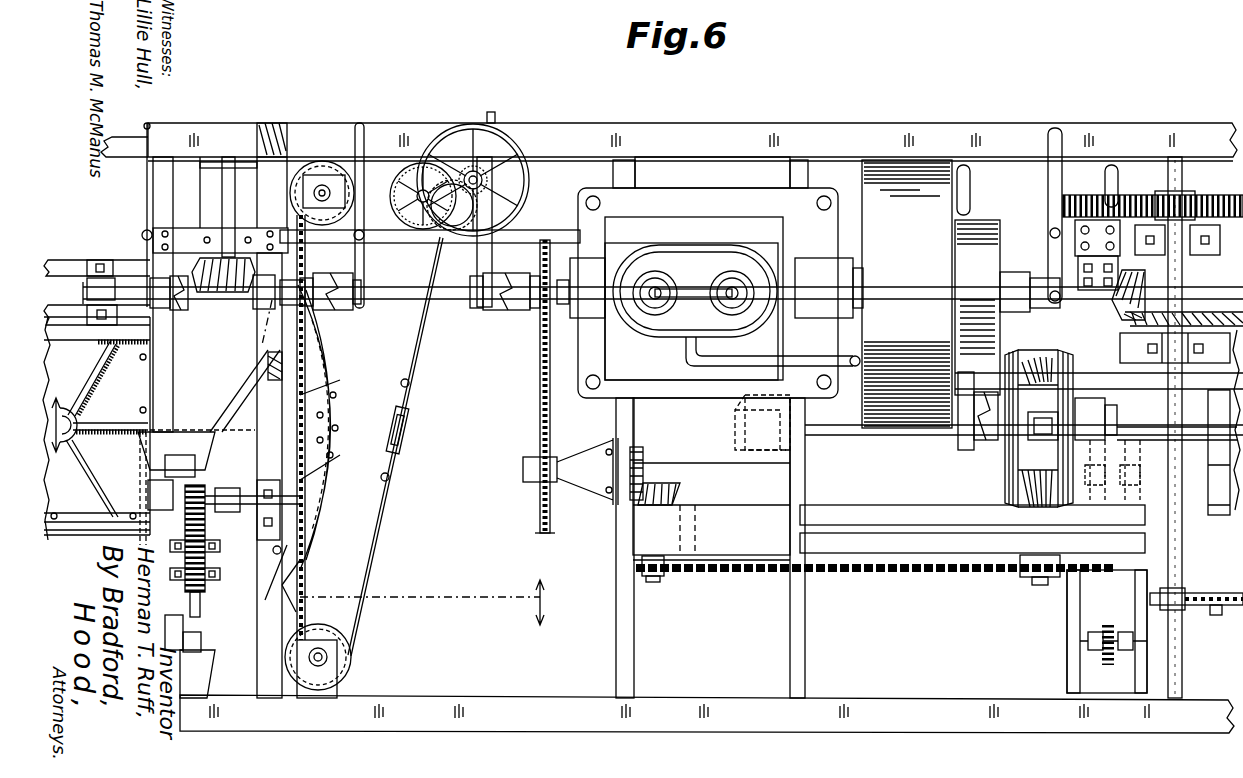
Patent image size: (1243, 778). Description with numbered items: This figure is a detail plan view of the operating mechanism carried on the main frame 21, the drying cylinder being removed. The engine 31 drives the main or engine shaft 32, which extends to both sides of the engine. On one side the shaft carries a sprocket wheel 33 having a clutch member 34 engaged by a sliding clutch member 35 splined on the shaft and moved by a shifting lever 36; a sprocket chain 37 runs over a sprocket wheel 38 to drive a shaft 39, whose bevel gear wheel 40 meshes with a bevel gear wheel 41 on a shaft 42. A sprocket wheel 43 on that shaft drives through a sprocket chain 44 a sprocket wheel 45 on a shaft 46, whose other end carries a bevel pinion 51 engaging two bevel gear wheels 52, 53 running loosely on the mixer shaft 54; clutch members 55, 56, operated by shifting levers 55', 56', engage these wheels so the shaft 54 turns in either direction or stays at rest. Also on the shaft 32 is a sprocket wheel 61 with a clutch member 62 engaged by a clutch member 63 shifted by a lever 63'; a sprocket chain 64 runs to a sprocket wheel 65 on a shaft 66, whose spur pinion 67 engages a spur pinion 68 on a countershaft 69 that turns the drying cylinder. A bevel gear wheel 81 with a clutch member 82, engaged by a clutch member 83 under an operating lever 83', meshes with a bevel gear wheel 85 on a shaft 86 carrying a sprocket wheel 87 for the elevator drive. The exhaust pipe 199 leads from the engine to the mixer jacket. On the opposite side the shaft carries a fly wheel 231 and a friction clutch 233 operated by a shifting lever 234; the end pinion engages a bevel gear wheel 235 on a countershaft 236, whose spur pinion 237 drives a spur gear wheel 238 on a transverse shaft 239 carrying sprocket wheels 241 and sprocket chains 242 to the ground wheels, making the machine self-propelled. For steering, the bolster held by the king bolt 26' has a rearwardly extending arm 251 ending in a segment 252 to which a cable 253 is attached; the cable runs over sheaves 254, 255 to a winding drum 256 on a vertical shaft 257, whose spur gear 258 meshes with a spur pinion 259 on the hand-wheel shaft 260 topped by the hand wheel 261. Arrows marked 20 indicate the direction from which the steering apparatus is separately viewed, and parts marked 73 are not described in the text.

The section line / direction indicator 20 is at (306, 511).
The main frame 21 is at (186, 136).
The king bolt 26' is at (96, 431).
The engine 31 is at (679, 282).
The main or engine shaft 32 is at (83, 294).
The sprocket wheel 33 is at (540, 312).
The clutch member 34 is at (512, 312).
The sliding clutch member 35 is at (491, 310).
The shifting lever 36 is at (494, 124).
The sprocket chain 37 is at (540, 410).
The sprocket wheel 38 is at (540, 508).
The shaft 39 is at (523, 468).
The bevel gear wheel 40 is at (646, 462).
The bevel gear wheel 41 is at (680, 496).
The shaft 42 is at (653, 580).
The sprocket wheel 43 is at (666, 576).
The sprocket chain 44 is at (915, 574).
The sprocket wheel 45 is at (1028, 577).
The shaft 46 is at (1044, 586).
The bevel pinion 51 is at (1031, 487).
The bevel gear wheel 52 is at (1005, 481).
The bevel gear wheel 53 is at (1058, 397).
The shaft 54 is at (838, 437).
The clutch member 55 is at (978, 424).
The shifting lever 55' is at (988, 189).
The clutch member 56 is at (1147, 488).
The shifting lever 56' is at (1132, 186).
The sprocket wheel 61 is at (316, 282).
The clutch member 62 is at (333, 311).
The clutch member 63 is at (374, 314).
The shifting lever 63' is at (383, 191).
The sprocket chain 64 is at (300, 381).
The sprocket wheel 65 is at (300, 507).
The shaft 66 is at (214, 505).
The spur pinion 67 is at (190, 511).
The spur pinion 68 is at (203, 596).
The countershaft 69 is at (209, 579).
The gear 73 is at (178, 455).
The bevel gear wheel 81 is at (203, 312).
The clutch member 82 is at (184, 310).
The clutch member 83 is at (163, 315).
The operating lever 83' is at (126, 215).
The bevel gear wheel 85 is at (226, 292).
The shaft 86 is at (222, 200).
The sprocket wheel 87 is at (211, 169).
The exhaust pipe 199 is at (684, 346).
The fly wheel 231 is at (912, 165).
The friction clutch 233 is at (990, 227).
The shifting lever 234 is at (1048, 145).
The bevel gear wheel 235 is at (1186, 325).
The countershaft 236 is at (1176, 297).
The spur pinion 237 is at (1195, 208).
The spur gear wheel 238 is at (1078, 195).
The shaft 239 is at (1185, 164).
The sprocket wheels 241 is at (1150, 258).
The sprocket chains 242 is at (1224, 262).
The rearwardly extending arm 251 is at (201, 418).
The segment 252 is at (326, 500).
The cable 253 is at (410, 361).
The sheave 254 is at (352, 662).
The sheave 255 is at (309, 166).
The winding drum 256 is at (409, 226).
The vertical shaft 257 is at (412, 200).
The spur gear 258 is at (446, 220).
The spur pinion 259 is at (474, 190).
The hand-wheel shaft 260 is at (474, 166).
The hand wheel 261 is at (531, 182).